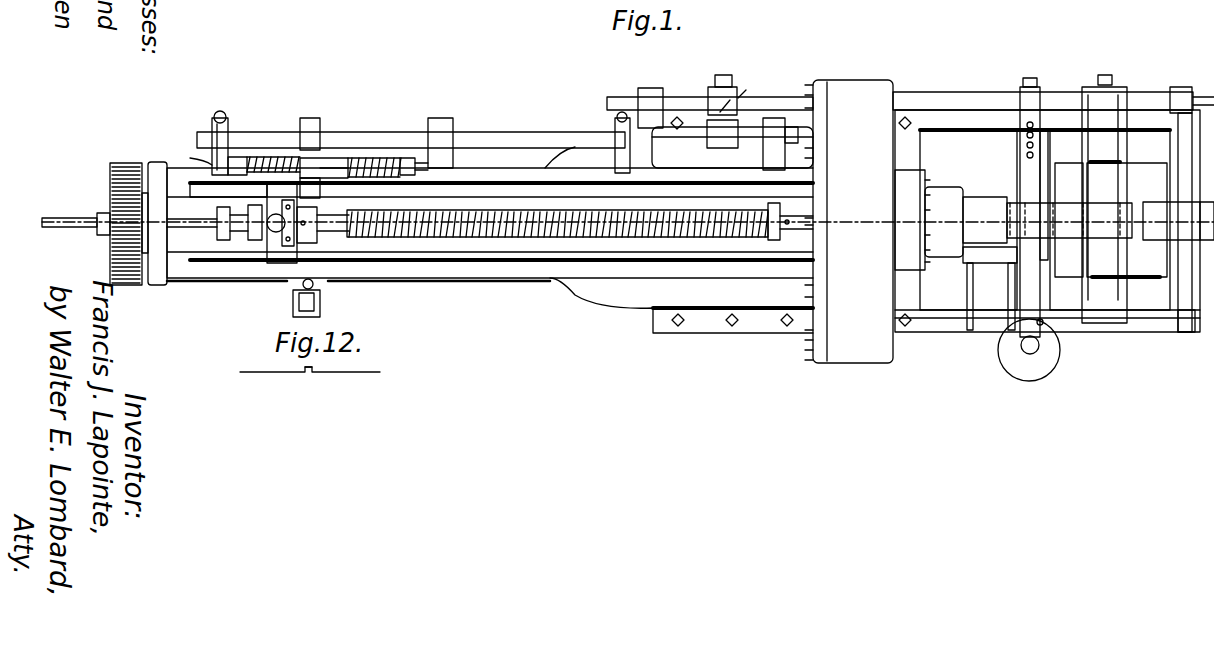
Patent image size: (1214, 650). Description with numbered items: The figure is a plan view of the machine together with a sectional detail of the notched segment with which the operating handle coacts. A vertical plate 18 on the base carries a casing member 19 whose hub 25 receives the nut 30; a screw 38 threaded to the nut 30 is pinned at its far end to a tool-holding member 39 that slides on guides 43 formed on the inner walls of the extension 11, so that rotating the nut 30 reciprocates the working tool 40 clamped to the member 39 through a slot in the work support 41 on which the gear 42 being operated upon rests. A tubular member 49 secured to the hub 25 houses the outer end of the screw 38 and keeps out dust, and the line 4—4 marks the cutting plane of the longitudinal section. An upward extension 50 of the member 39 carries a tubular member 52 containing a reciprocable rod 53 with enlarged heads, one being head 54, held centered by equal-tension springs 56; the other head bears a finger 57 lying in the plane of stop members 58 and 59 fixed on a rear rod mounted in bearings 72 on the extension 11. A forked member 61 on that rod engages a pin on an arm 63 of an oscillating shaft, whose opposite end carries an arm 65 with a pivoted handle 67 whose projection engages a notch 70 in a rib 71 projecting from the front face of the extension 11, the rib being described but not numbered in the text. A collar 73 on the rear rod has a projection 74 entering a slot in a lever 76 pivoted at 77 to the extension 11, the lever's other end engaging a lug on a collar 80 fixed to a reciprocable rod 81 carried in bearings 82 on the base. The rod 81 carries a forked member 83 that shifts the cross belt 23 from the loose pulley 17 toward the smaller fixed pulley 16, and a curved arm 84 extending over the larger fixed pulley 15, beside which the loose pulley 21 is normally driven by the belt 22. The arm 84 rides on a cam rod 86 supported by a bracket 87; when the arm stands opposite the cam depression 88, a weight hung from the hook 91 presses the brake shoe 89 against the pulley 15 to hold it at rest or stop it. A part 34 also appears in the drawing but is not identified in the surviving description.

In FIG. 1, the section line 4 is at (42, 222).
In FIG. 1, the working tool 40 is at (68, 219).
In FIG. 1, the work support 41 is at (103, 213).
In FIG. 1, the gear 42 is at (122, 163).
In FIG. 1, the guides 43 is at (477, 187).
In FIG. 1, the extension 11 is at (462, 280).
In FIG. 1, the tool holder member 39 is at (277, 252).
In FIG. 1, the upward extension 50 is at (320, 207).
In FIG. 1, the screw 38 is at (500, 238).
In FIG. 1, the rail 71 is at (270, 282).
In FIG. 12, the rail 71 is at (286, 375).
In FIG. 1, the arm 65 is at (293, 306).
In FIG. 1, the handle 67 is at (315, 287).
In FIG. 1, the vertical plate 18 is at (816, 318).
In FIG. 1, the forked member 61 is at (312, 118).
In FIG. 1, the finger 57 is at (227, 142).
In FIG. 1, the stop member 58 is at (193, 154).
In FIG. 1, the springs 56 is at (272, 157).
In FIG. 1, the arm 63 is at (320, 148).
In FIG. 1, the tubular member 52 is at (333, 163).
In FIG. 1, the reciprocable rod 53 is at (377, 157).
In FIG. 1, the enlarged head 54 is at (412, 158).
In FIG. 1, the bearings 72 is at (445, 127).
In FIG. 1, the stop member 59 is at (615, 124).
In FIG. 1, the collar 73 is at (712, 136).
In FIG. 1, the lever 76 is at (710, 113).
In FIG. 1, the pivot 77 is at (723, 75).
In FIG. 1, the collar 80 is at (736, 90).
In FIG. 1, the projection 74 is at (735, 103).
In FIG. 1, the casing member 19 is at (855, 86).
In FIG. 1, the hub 25 is at (895, 205).
In FIG. 1, the tubular member 49 is at (980, 205).
In FIG. 1, the reciprocable rod 81 is at (930, 99).
In FIG. 1, the loose pulley 21 is at (942, 298).
In FIG. 1, the belt 22 is at (990, 130).
In FIG. 1, the legs 34 is at (970, 332).
In FIG. 1, the curved arm 84 is at (1035, 92).
In FIG. 1, the brake shoe 89 is at (1044, 145).
In FIG. 1, the hook 91 is at (1025, 352).
In FIG. 1, the nut 30 is at (1032, 370).
In FIG. 1, the cam depression 88 is at (1043, 325).
In FIG. 1, the fixed pulley 15 is at (1052, 300).
In FIG. 1, the fixed pulley 16 is at (1068, 277).
In FIG. 1, the loose pulley 17 is at (1140, 270).
In FIG. 1, the forked member 83 is at (1115, 95).
In FIG. 1, the cross belt 23 is at (1110, 162).
In FIG. 1, the bearings 82 is at (1183, 92).
In FIG. 1, the bracket 87 is at (1184, 332).
In FIG. 1, the cam rod 86 is at (1138, 320).
In FIG. 12, the notch 70 is at (314, 374).